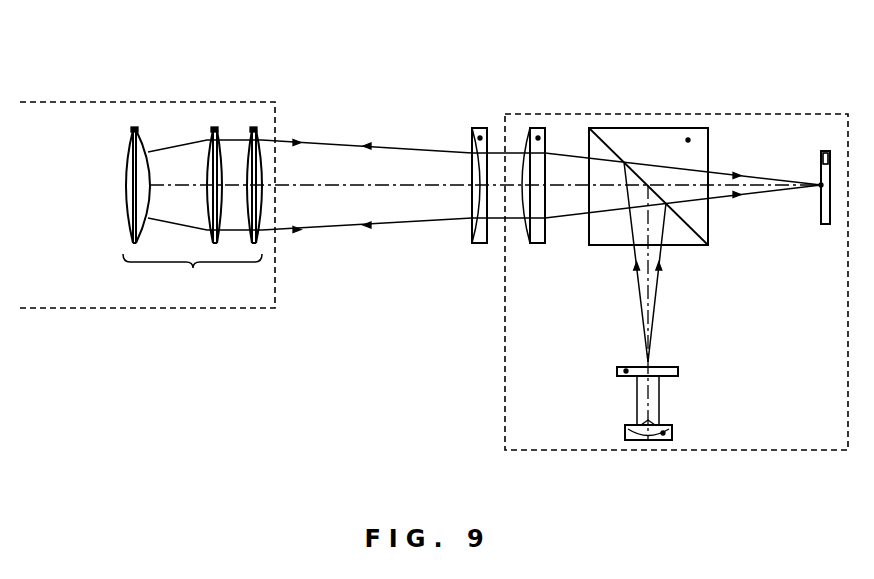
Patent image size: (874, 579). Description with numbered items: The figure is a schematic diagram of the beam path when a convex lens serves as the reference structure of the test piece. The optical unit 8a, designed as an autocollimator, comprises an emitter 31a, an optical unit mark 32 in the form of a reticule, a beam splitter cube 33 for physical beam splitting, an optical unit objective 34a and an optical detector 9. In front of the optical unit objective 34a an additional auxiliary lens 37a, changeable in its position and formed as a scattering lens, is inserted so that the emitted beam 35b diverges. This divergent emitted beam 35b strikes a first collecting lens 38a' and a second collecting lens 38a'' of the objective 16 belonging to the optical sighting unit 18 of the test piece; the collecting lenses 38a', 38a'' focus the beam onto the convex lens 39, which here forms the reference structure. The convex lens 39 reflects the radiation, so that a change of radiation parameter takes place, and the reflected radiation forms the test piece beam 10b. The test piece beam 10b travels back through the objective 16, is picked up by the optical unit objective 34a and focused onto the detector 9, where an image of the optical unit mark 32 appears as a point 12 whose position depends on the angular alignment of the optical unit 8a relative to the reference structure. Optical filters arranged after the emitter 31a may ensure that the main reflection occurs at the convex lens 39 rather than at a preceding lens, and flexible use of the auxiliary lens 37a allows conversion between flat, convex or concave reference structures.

The convex lens 39 is at (134, 130).
The second collecting lens 38a'' is at (164, 138).
The first collecting lens 38a' is at (226, 138).
The objective 16 is at (192, 280).
The sighting unit 18 is at (263, 322).
The test piece beam 10b is at (297, 229).
The emitted beam 35b is at (367, 227).
The auxiliary lens 37a is at (480, 138).
The optical unit objective 34a is at (538, 138).
The beam splitter cube 33 is at (688, 140).
The point 12 is at (821, 185).
The optical detector 9 is at (827, 152).
The optical unit mark 32 is at (626, 371).
The emitter 31a is at (663, 433).
The optical unit 8a is at (490, 423).